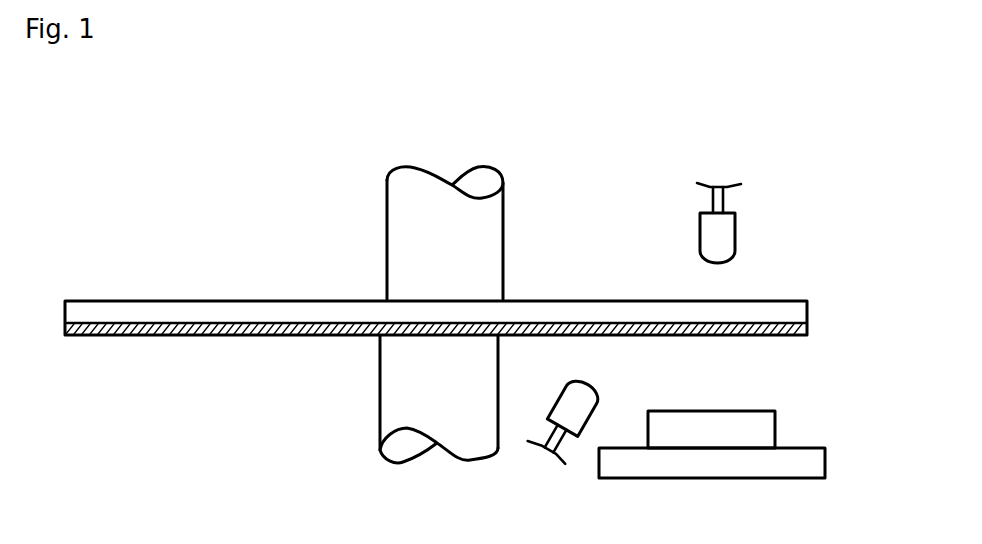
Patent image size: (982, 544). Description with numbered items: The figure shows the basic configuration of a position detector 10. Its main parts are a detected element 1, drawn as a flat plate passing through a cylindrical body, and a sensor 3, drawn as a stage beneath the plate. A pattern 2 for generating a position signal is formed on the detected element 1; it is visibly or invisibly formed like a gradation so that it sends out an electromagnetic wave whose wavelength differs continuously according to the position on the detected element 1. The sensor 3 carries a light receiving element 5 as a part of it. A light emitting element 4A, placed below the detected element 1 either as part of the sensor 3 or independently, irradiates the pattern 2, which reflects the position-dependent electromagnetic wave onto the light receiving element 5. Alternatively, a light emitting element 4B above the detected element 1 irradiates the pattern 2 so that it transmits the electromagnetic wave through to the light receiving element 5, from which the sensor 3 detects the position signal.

The position detector 10 is at (196, 166).
The detected element 1 is at (770, 302).
The pattern 2 is at (812, 332).
The sensor 3 is at (858, 420).
The light emitting element 4A is at (558, 405).
The light emitting element 4B is at (736, 237).
The light receiving element 5 is at (715, 411).